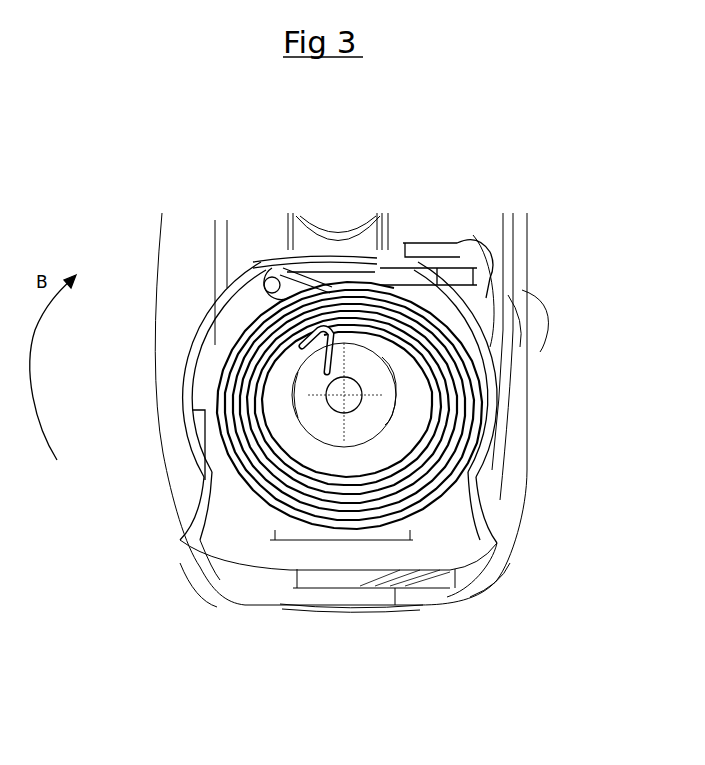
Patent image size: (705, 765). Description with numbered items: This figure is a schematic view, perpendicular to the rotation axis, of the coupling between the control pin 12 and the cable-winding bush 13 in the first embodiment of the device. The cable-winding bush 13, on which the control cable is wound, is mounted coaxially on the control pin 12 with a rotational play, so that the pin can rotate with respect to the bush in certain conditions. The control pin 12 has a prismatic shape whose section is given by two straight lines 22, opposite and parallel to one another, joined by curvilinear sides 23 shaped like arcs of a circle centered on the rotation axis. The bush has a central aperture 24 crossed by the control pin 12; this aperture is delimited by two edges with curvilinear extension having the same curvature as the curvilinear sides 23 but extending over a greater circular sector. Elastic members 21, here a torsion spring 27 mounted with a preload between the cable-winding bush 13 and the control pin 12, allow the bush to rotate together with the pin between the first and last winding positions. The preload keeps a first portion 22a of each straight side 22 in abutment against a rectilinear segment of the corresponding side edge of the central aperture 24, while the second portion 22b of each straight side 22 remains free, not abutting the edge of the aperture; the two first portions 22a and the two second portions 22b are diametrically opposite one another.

The control pin 12 is at (372, 417).
The cable-winding bush 13 is at (217, 350).
The elastic members 21 is at (384, 285).
The straight lines 22 is at (297, 408).
The first portion 22a is at (383, 363).
The second portion 22b is at (296, 398).
The curvilinear sides 23 is at (333, 335).
The central aperture 24 is at (400, 388).
The torsion spring 27 is at (250, 358).